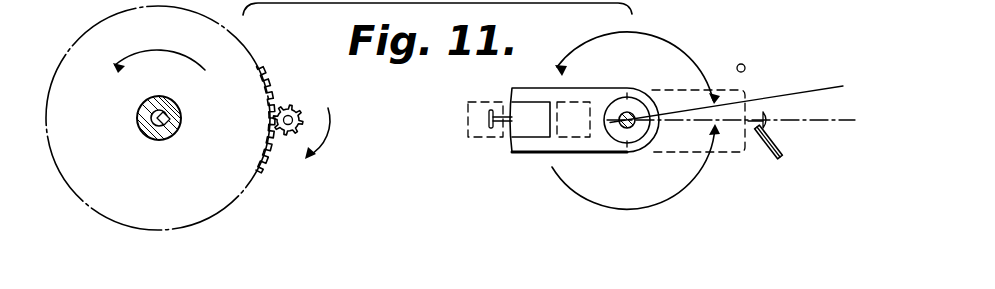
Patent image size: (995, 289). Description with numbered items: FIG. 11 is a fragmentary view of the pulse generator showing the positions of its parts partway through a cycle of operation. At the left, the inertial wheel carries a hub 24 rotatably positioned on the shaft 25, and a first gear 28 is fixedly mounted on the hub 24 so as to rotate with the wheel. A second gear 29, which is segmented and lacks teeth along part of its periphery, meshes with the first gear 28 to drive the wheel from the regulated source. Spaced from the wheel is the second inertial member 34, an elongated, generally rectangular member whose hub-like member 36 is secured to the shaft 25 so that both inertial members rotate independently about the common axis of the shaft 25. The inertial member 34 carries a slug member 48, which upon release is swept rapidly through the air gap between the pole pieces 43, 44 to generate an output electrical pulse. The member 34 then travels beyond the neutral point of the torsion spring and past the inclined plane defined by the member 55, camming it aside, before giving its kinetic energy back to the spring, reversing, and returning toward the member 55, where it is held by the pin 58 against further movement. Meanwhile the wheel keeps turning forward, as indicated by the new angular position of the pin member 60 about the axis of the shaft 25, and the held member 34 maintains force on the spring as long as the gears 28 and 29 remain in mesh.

The hub 24 is at (140, 127).
The shaft 25 is at (181, 126).
The first gear 28 is at (271, 148).
The second gear 29 is at (292, 105).
The second inertial member 34 is at (735, 152).
The hub-like member 36 is at (627, 152).
The pole piece 43 is at (468, 125).
The pole piece 44 is at (569, 100).
The slug member 48 is at (522, 137).
The inclined plane member 55 is at (776, 158).
The pin 58 is at (489, 113).
The pin member 60 is at (742, 64).